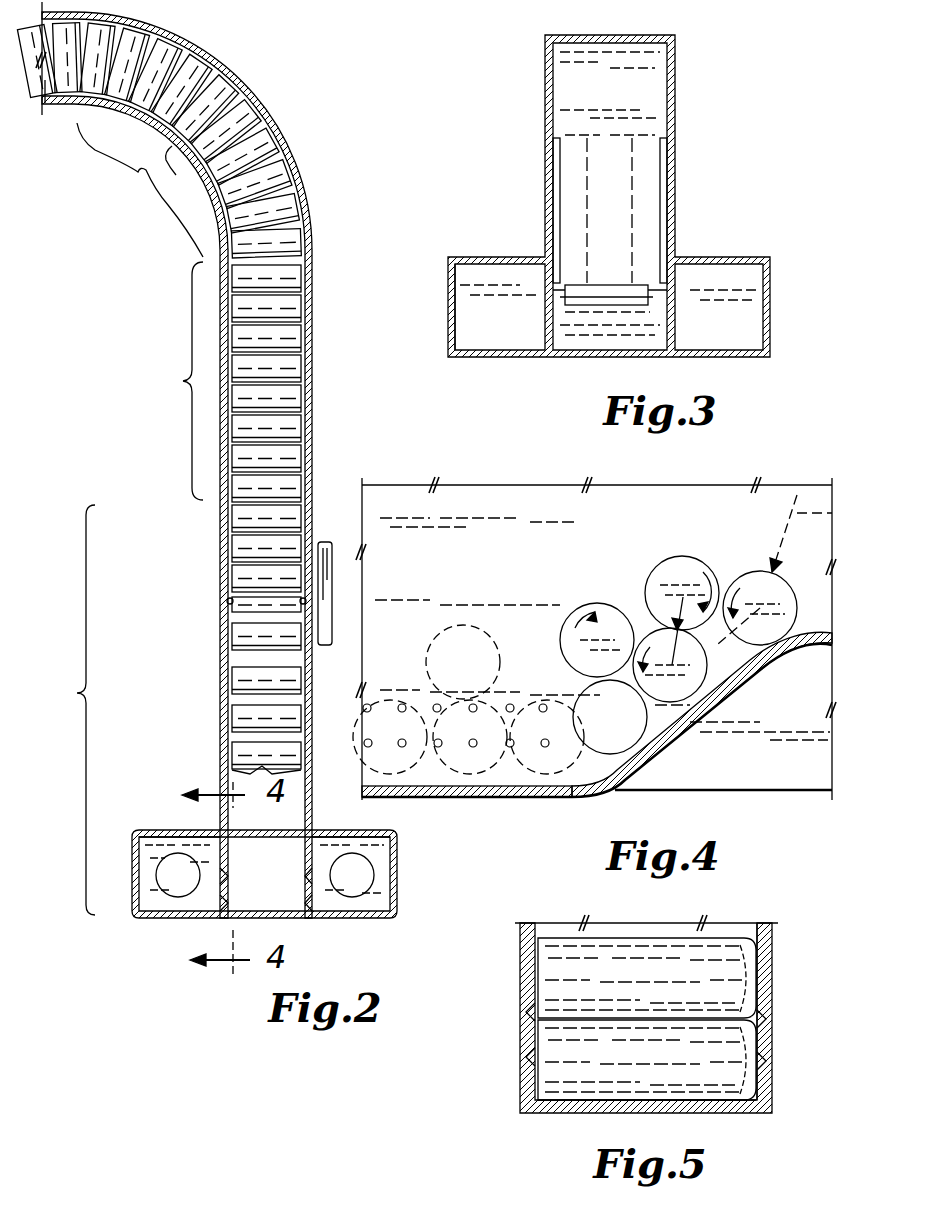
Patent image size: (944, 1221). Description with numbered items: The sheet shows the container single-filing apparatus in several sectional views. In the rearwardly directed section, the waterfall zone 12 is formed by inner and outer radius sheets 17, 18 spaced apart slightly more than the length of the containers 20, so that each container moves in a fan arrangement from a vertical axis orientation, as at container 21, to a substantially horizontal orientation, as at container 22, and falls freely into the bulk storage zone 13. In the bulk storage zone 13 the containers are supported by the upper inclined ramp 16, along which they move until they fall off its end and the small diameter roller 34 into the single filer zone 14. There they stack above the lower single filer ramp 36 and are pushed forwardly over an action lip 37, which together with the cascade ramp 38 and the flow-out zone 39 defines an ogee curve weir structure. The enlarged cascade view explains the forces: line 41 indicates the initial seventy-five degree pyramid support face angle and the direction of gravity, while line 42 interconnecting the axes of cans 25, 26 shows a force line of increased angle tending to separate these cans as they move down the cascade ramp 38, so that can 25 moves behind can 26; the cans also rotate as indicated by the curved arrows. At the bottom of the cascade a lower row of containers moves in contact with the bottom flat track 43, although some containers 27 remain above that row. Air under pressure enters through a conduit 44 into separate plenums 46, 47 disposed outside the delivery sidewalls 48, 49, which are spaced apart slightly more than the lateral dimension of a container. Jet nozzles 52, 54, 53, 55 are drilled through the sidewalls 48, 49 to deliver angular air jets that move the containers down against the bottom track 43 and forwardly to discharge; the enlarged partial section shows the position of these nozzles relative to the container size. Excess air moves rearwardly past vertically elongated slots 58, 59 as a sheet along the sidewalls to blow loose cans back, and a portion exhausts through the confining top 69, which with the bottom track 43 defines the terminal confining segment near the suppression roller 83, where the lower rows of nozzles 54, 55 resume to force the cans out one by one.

In FIG. 2, the waterfall zone 12 is at (140, 190).
In FIG. 2, the bulk storage zone 13 is at (177, 381).
In FIG. 2, the single filer zone 14 is at (69, 710).
In FIG. 2, the upper inclined ramp 16 is at (222, 535).
In FIG. 2, the inner radius sheet 17 is at (181, 171).
In FIG. 2, the outer radius sheet 18 is at (267, 109).
In FIG. 2, the container 20 is at (290, 158).
In FIG. 5, the container 20 is at (740, 1082).
In FIG. 2, the container 21 is at (62, 75).
In FIG. 2, the container 22 is at (296, 238).
In FIG. 4, the can 25 is at (682, 565).
In FIG. 4, the can 26 is at (692, 690).
In FIG. 4, the container 27 is at (468, 640).
In FIG. 5, the container 27 is at (755, 962).
In FIG. 2, the small diameter roller 34 is at (232, 611).
In FIG. 4, the lower single filer ramp 36 is at (817, 647).
In FIG. 4, the action lip 37 is at (752, 663).
In FIG. 4, the cascade ramp 38 is at (683, 725).
In FIG. 4, the flow-out zone 39 is at (535, 790).
In FIG. 4, the line 41 is at (794, 570).
In FIG. 4, the line 42 is at (683, 597).
In FIG. 4, the bottom flat track 43 is at (392, 790).
In FIG. 2, the conduit 44 is at (168, 868).
In FIG. 2, the plenum 46 is at (140, 915).
In FIG. 3, the plenum 46 is at (755, 315).
In FIG. 4, the plenum 46 is at (765, 795).
In FIG. 2, the plenum 47 is at (330, 585).
In FIG. 3, the plenum 47 is at (462, 302).
In FIG. 2, the sidewall 48 is at (220, 655).
In FIG. 4, the sidewall 48 is at (505, 554).
In FIG. 5, the sidewall 48 is at (530, 962).
In FIG. 2, the sidewall 49 is at (313, 680).
In FIG. 5, the sidewall 49 is at (773, 972).
In FIG. 2, the jet nozzle 52 is at (224, 878).
In FIG. 4, the jet nozzle 52 is at (498, 705).
In FIG. 5, the jet nozzle 52 is at (527, 1012).
In FIG. 2, the jet nozzle 53 is at (302, 878).
In FIG. 5, the jet nozzle 53 is at (762, 1019).
In FIG. 2, the jet nozzle 54 is at (222, 895).
In FIG. 4, the jet nozzle 54 is at (472, 748).
In FIG. 5, the jet nozzle 54 is at (530, 1057).
In FIG. 2, the jet nozzle 55 is at (303, 900).
In FIG. 5, the jet nozzle 55 is at (765, 1060).
In FIG. 3, the slot 58 is at (663, 210).
In FIG. 3, the slot 59 is at (556, 208).
In FIG. 3, the confining top 69 is at (650, 292).
In FIG. 3, the suppression roller 83 is at (600, 305).